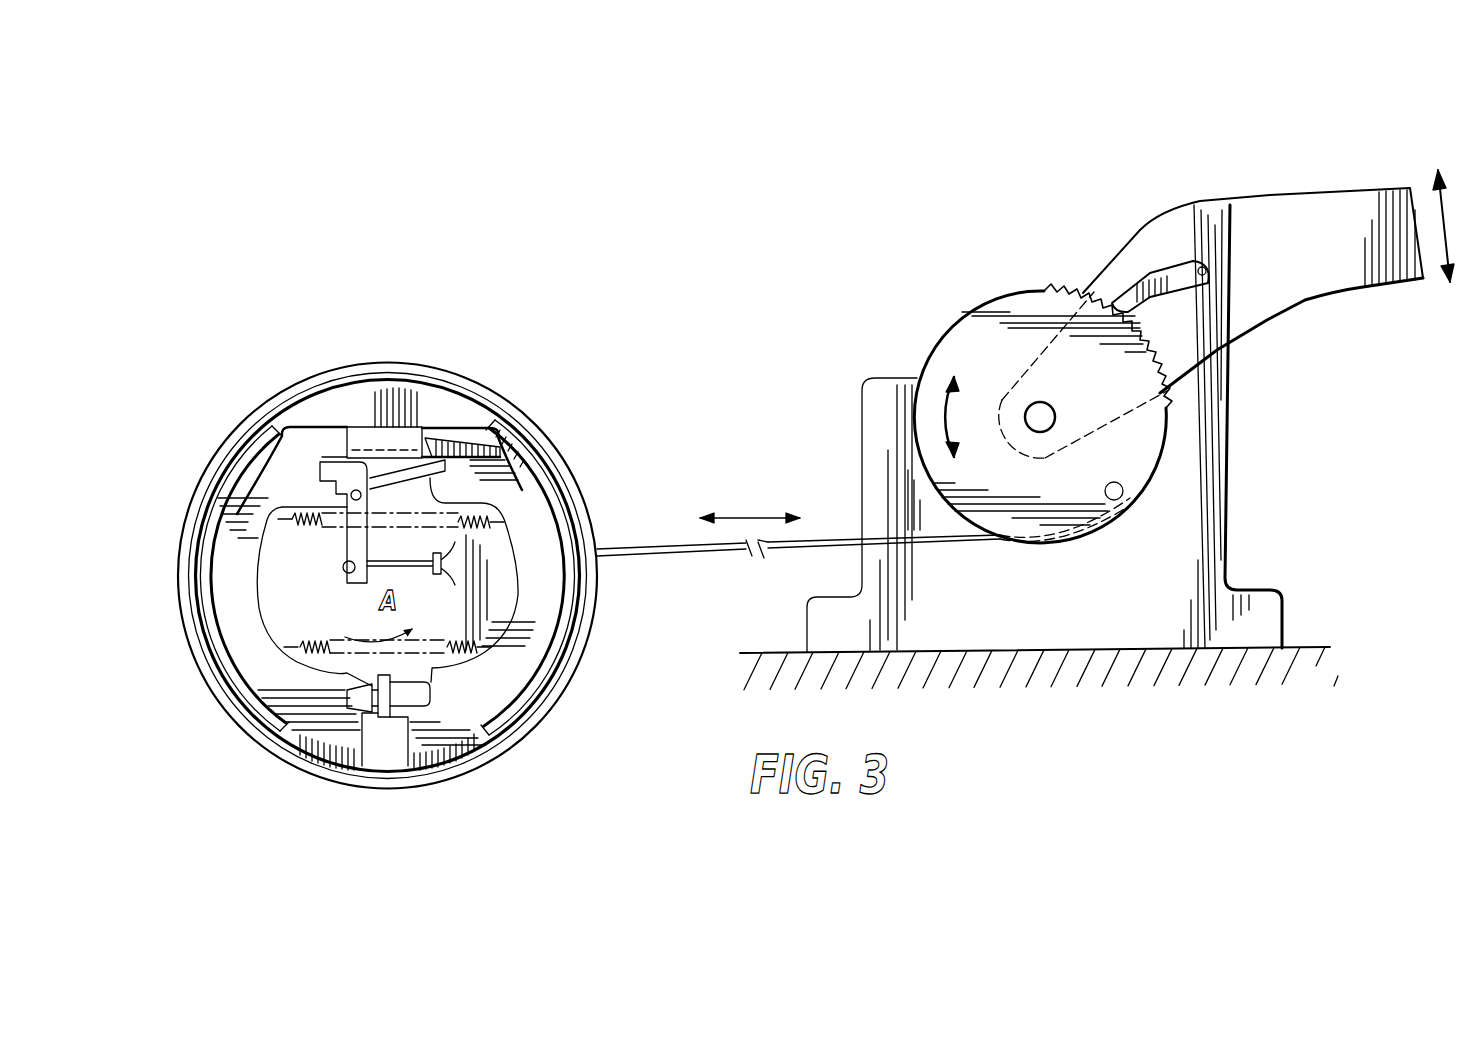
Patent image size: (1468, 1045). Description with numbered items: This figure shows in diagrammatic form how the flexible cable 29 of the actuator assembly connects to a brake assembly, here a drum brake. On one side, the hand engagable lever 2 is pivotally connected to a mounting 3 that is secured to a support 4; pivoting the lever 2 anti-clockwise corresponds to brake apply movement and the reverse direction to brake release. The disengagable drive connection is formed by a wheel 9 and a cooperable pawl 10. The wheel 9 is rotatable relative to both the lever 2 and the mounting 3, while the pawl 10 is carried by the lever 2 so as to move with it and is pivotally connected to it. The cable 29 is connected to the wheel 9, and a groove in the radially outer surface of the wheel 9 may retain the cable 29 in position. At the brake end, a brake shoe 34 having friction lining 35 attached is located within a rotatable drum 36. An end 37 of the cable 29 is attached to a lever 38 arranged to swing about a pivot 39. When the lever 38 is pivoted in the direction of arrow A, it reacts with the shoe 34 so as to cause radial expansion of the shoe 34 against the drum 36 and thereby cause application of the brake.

The hand engagable lever 2 is at (1310, 262).
The mounting 3 is at (1182, 537).
The support 4 is at (1258, 647).
The wheel 9 is at (977, 347).
The pawl 10 is at (1131, 279).
The flexible cable 29 is at (932, 547).
The brake shoe 34 is at (247, 659).
The friction lining 35 is at (543, 487).
The rotatable drum 36 is at (483, 398).
The end of the cable 37 is at (345, 574).
The lever 38 is at (350, 538).
The pivot 39 is at (349, 494).